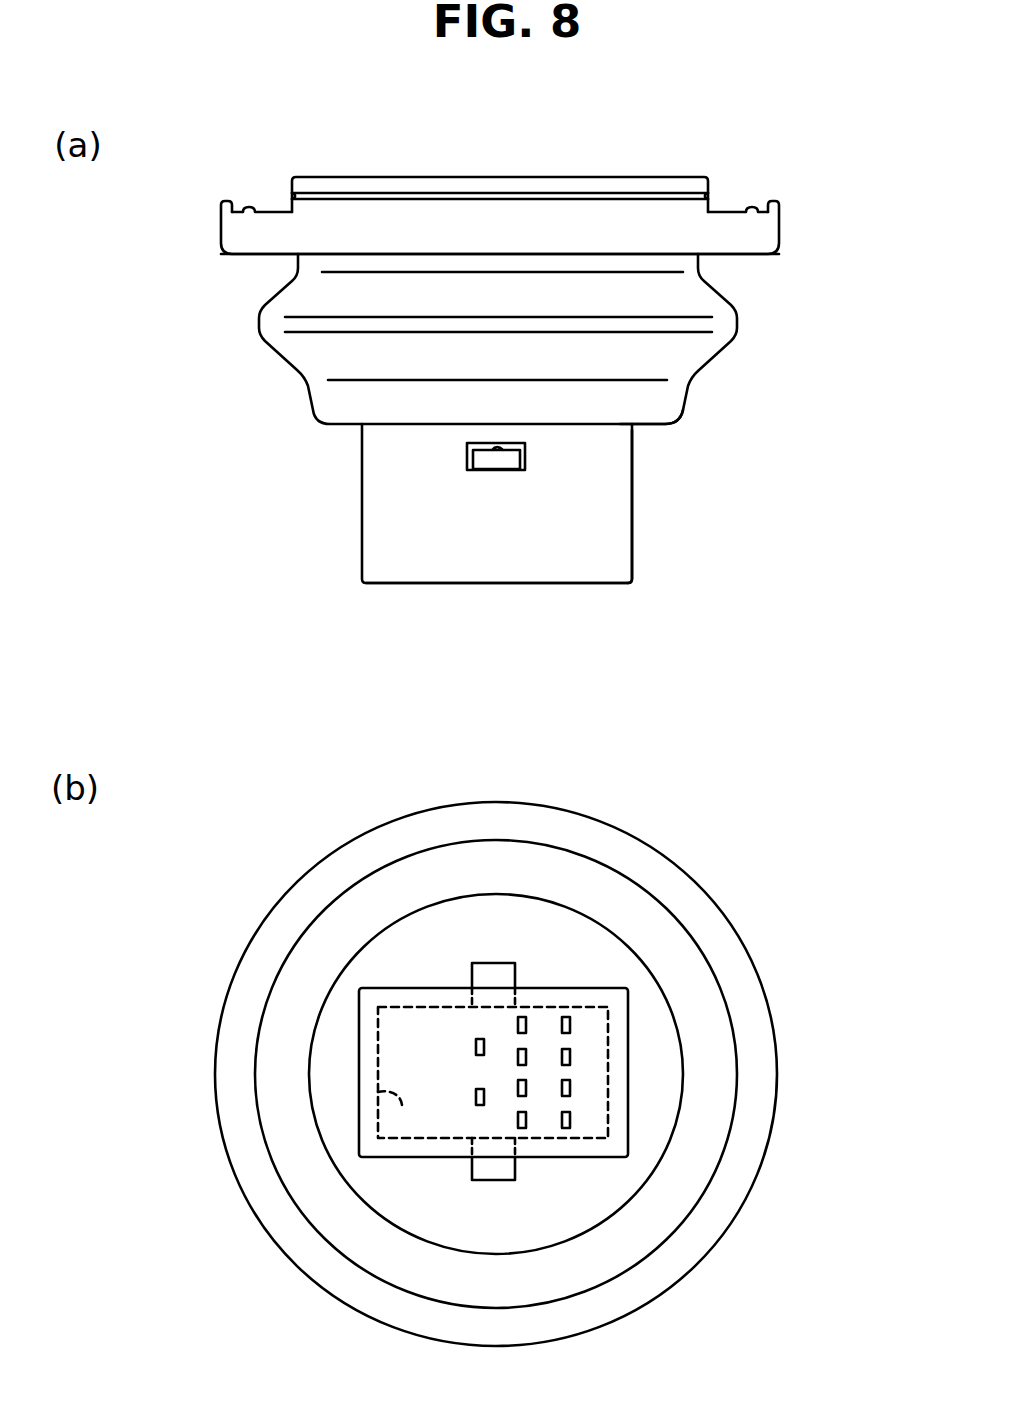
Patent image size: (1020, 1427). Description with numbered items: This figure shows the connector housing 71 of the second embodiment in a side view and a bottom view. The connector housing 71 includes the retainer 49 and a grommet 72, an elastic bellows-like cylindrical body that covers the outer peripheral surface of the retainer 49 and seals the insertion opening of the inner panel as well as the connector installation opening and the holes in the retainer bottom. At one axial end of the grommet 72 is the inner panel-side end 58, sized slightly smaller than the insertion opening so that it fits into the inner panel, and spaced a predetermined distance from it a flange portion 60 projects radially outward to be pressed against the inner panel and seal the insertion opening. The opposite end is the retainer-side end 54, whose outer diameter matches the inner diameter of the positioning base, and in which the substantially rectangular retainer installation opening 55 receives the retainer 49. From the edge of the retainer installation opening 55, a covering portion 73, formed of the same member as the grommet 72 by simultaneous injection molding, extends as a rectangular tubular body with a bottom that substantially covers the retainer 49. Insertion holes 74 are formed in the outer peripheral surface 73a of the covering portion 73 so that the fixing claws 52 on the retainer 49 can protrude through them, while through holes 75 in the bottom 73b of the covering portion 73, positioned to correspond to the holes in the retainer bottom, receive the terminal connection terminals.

The retainer 49 is at (611, 1076).
The fixing claws 52 is at (525, 462).
The retainer-side end 54 is at (639, 414).
The retainer installation opening 55 is at (402, 1108).
The inner panel-side end 58 is at (683, 187).
The flange portion 60 is at (771, 237).
The connector housing 71 is at (797, 204).
The grommet 72 is at (741, 318).
The covering portion 73 is at (626, 586).
The outer peripheral surface of the covering portion 73a is at (603, 562).
The bottom of the covering portion 73b is at (456, 585).
The insertion holes 74 is at (476, 469).
The through holes 75 is at (478, 1046).